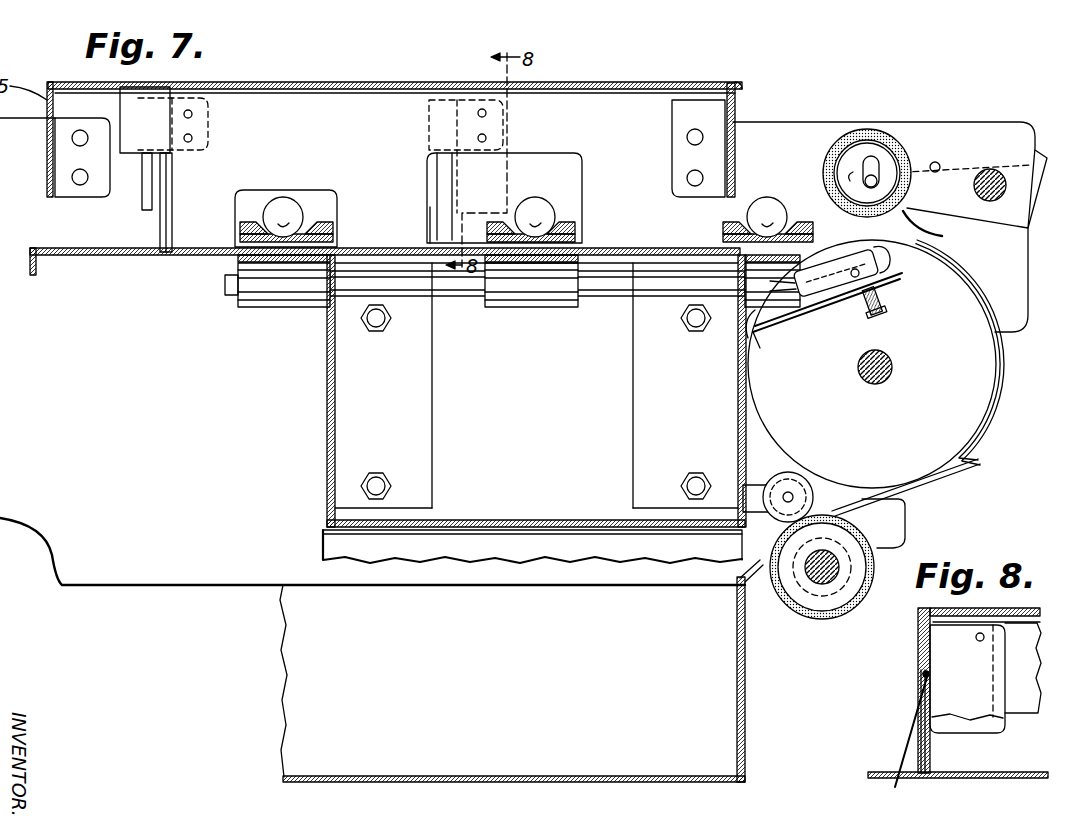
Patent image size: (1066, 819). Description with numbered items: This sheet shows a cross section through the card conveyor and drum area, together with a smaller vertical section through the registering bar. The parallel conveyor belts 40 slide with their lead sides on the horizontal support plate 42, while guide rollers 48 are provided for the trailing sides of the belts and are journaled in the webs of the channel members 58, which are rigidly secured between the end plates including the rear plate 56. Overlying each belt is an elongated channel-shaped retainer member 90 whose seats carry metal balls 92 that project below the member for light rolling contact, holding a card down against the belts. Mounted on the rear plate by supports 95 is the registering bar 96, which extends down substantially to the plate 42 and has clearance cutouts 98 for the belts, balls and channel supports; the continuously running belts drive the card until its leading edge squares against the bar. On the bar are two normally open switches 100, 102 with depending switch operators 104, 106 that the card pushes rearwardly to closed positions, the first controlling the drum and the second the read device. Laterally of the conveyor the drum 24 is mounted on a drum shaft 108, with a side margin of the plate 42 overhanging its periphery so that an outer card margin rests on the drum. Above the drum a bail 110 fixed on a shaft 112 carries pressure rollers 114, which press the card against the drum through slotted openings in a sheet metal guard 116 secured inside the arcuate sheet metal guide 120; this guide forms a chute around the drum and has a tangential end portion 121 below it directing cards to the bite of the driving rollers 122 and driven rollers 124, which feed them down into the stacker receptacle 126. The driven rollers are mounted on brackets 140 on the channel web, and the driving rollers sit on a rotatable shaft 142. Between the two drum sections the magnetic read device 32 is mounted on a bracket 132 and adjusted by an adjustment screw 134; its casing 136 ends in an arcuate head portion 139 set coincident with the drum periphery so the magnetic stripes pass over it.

In FIG. 7, the drum 24 is at (946, 458).
In FIG. 7, the magnetic read device 32 is at (893, 273).
In FIG. 7, the belts 40 is at (238, 253).
In FIG. 7, the horizontal support plate 42 is at (76, 254).
In FIG. 8, the horizontal support plate 42 is at (880, 772).
In FIG. 7, the guide rollers 48 is at (270, 308).
In FIG. 7, the rear plate 56 is at (222, 585).
In FIG. 7, the channel members 58 is at (327, 395).
In FIG. 7, the retainer members 90 is at (340, 234).
In FIG. 7, the metal balls 92 is at (283, 198).
In FIG. 7, the supports 95 is at (745, 106).
In FIG. 8, the supports 95 is at (1038, 608).
In FIG. 7, the registering bar 96 is at (331, 96).
In FIG. 8, the registering bar 96 is at (918, 640).
In FIG. 7, the clearance cutouts 98 is at (556, 155).
In FIG. 8, the clearance cutouts 98 is at (919, 686).
In FIG. 7, the switch 100 is at (428, 184).
In FIG. 8, the switch 100 is at (993, 735).
In FIG. 7, the switch 102 is at (141, 199).
In FIG. 7, the switch operator 104 is at (442, 221).
In FIG. 8, the switch operator 104 is at (910, 722).
In FIG. 7, the switch operator 106 is at (159, 231).
In FIG. 7, the drum shaft 108 is at (888, 375).
In FIG. 7, the bail 110 is at (923, 160).
In FIG. 7, the shaft 112 is at (991, 175).
In FIG. 7, the pressure rollers 114 is at (868, 130).
In FIG. 7, the sheet metal guard 116 is at (932, 226).
In FIG. 7, the arcuate sheet metal guide 120 is at (981, 430).
In FIG. 7, the end portion 121 is at (905, 519).
In FIG. 7, the driving rollers 122 is at (811, 620).
In FIG. 7, the driven rollers 124 is at (795, 478).
In FIG. 7, the stacker receptacle 126 is at (744, 682).
In FIG. 7, the bracket 132 is at (775, 331).
In FIG. 7, the adjustment screw 134 is at (881, 318).
In FIG. 7, the casing 136 is at (822, 303).
In FIG. 7, the arcuate head portion 139 is at (889, 262).
In FIG. 7, the brackets 140 is at (748, 488).
In FIG. 7, the rotatable shaft 142 is at (810, 590).